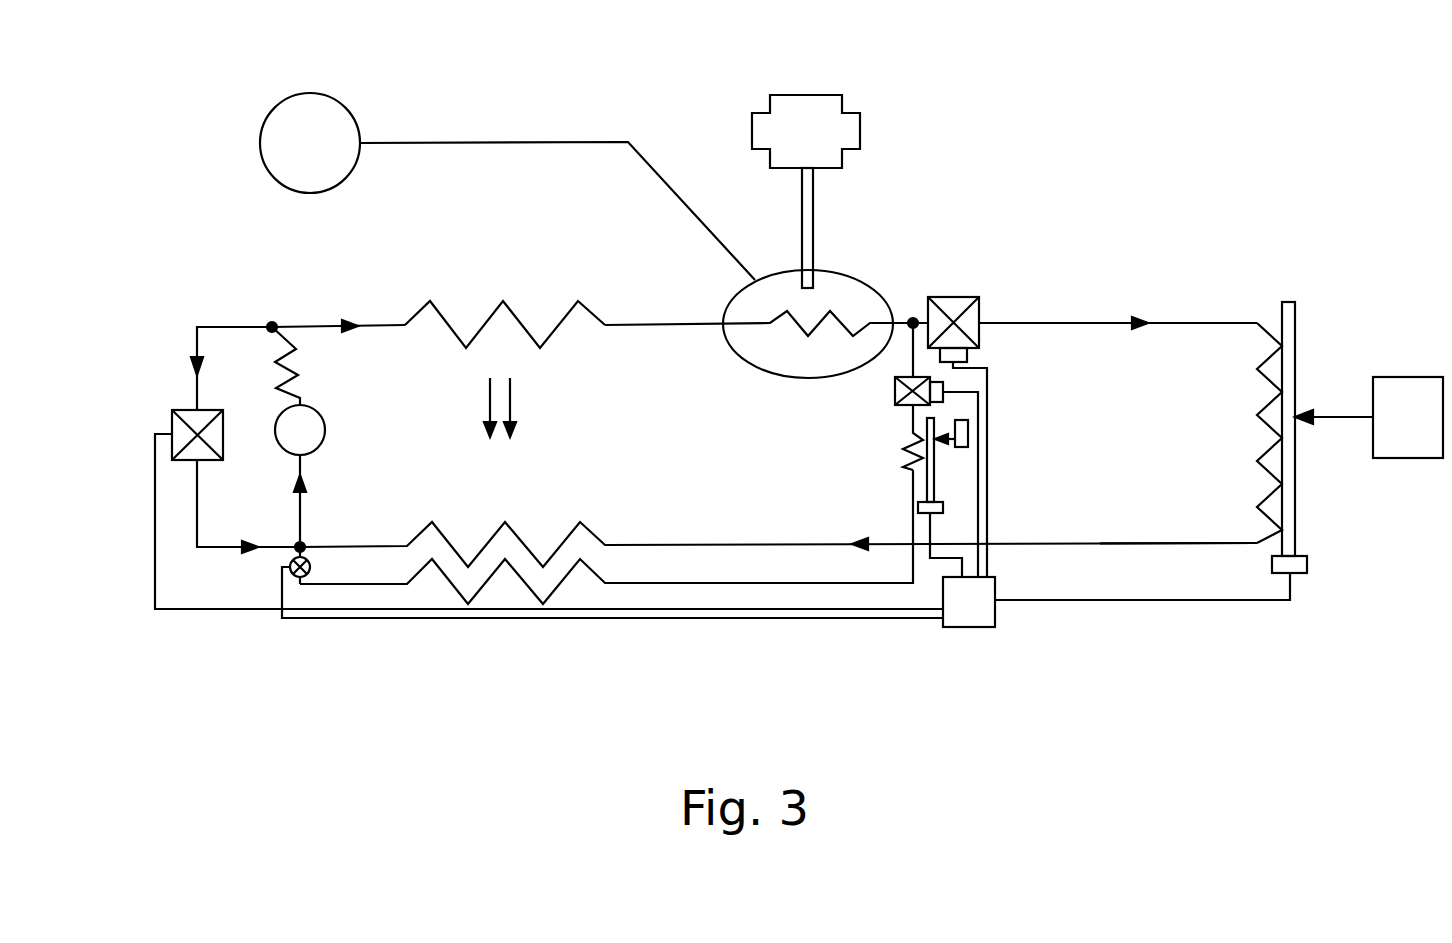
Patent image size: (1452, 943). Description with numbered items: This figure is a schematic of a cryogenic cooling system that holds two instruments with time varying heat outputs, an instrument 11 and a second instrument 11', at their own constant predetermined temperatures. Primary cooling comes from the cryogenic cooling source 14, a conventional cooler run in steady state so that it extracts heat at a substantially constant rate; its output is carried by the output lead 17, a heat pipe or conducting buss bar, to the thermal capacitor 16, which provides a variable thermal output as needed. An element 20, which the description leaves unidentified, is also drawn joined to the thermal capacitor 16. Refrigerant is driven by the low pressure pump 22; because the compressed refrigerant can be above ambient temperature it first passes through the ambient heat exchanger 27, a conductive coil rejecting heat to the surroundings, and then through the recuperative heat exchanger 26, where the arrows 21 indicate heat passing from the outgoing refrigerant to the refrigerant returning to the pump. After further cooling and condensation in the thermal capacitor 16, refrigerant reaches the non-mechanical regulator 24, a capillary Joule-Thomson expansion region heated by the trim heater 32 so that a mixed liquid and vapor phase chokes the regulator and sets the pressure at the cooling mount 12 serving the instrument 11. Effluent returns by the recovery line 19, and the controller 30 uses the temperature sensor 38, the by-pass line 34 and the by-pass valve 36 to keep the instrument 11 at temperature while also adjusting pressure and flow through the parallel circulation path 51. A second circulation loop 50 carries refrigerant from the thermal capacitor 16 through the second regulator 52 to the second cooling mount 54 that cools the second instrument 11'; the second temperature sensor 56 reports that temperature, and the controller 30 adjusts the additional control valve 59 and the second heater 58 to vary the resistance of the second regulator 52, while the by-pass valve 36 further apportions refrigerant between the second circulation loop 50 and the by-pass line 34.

The instrument 11 is at (1373, 393).
The second instrument 11' is at (1020, 411).
The cooling mount 12 is at (1295, 318).
The cryogenic cooling source 14 is at (860, 130).
The thermal capacitor 16 is at (855, 278).
The output lead 17 is at (813, 210).
The recovery line 19 is at (1167, 543).
The fan motor 20 is at (340, 102).
The arrows 21 is at (513, 395).
The low pressure pump 22 is at (325, 425).
The non-mechanical regulator 24 is at (965, 297).
The recuperative heat exchanger 26 is at (440, 312).
The ambient heat exchanger 27 is at (292, 350).
The controller 30 is at (975, 627).
The trim heater 32 is at (967, 355).
The by-pass line 34 is at (218, 327).
The by-pass valve 36 is at (185, 410).
The temperature sensor 38 is at (1307, 565).
The second circulation loop 50 is at (913, 352).
The parallel circulation path 51 is at (1175, 323).
The second regulator 52 is at (895, 392).
The second cooling mount 54 is at (934, 458).
The second temperature sensor 56 is at (943, 507).
The second heater 58 is at (943, 386).
The additional control valve 59 is at (312, 566).